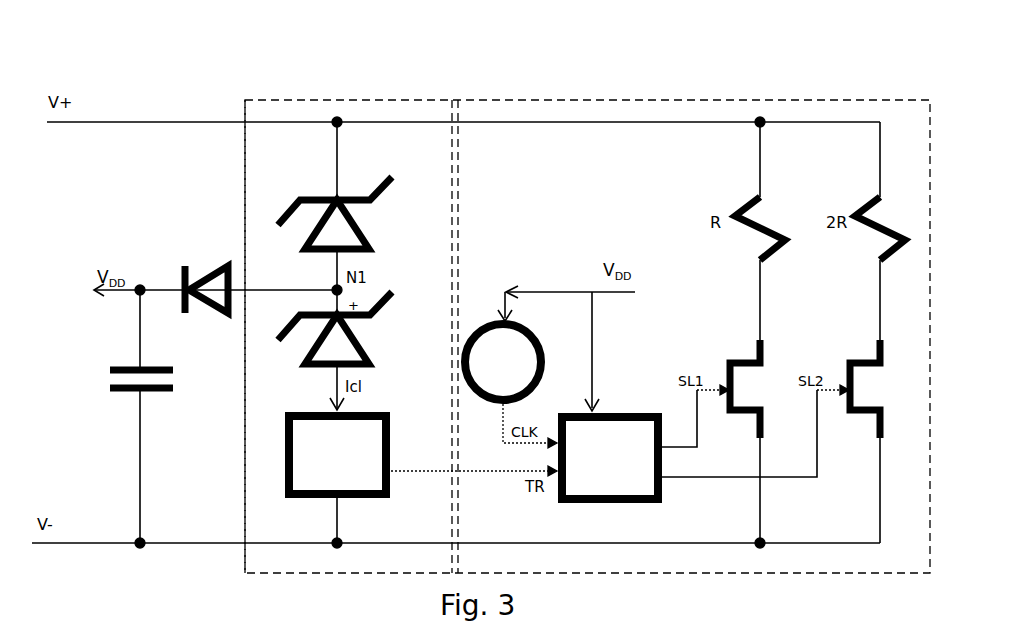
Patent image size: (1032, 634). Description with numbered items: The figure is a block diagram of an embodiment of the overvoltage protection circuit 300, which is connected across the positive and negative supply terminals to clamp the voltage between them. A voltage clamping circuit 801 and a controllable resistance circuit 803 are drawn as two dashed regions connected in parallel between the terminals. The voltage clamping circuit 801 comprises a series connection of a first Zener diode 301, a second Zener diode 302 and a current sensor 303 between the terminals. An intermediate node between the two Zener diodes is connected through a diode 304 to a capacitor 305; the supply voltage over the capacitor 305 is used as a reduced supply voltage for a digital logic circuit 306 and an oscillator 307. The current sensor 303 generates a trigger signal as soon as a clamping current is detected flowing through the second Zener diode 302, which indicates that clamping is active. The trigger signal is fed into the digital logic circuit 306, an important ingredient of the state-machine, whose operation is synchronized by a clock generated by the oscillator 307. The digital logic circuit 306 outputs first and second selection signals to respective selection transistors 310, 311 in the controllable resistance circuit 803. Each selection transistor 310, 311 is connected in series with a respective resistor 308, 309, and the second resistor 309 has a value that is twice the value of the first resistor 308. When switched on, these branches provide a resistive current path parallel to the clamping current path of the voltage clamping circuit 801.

The overvoltage protection circuit 300 is at (713, 90).
The voltage clamping circuit 801 is at (357, 100).
The controllable resistance circuit 803 is at (578, 100).
The first Zener diode 301 is at (378, 204).
The second Zener diode 302 is at (390, 306).
The current sensor 303 is at (356, 465).
The diode 304 is at (216, 266).
The capacitor 305 is at (116, 368).
The digital logic circuit 306 is at (628, 468).
The oscillator 307 is at (520, 371).
The first resistor 308 is at (780, 232).
The second resistor 309 is at (904, 232).
The first selection transistor 310 is at (730, 363).
The second selection transistor 311 is at (850, 363).